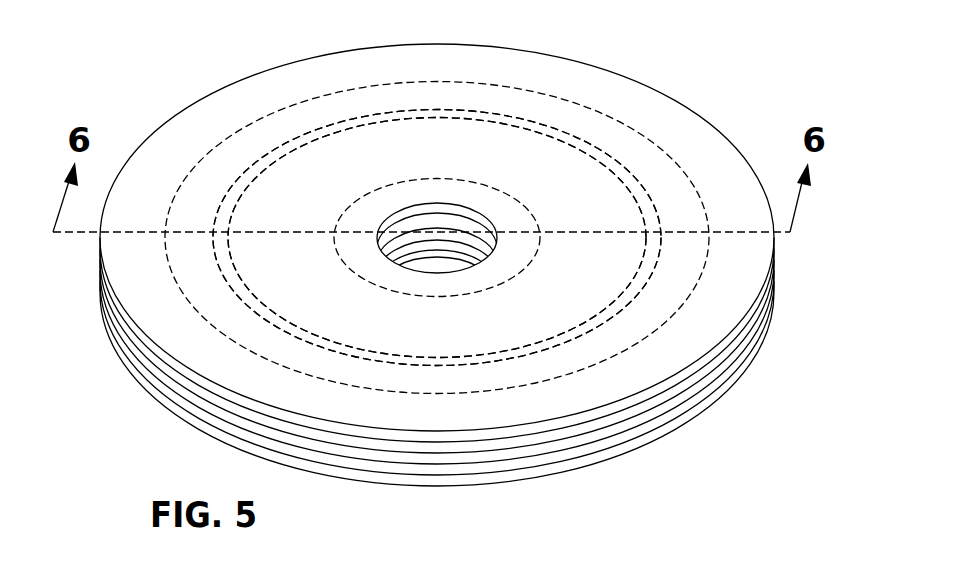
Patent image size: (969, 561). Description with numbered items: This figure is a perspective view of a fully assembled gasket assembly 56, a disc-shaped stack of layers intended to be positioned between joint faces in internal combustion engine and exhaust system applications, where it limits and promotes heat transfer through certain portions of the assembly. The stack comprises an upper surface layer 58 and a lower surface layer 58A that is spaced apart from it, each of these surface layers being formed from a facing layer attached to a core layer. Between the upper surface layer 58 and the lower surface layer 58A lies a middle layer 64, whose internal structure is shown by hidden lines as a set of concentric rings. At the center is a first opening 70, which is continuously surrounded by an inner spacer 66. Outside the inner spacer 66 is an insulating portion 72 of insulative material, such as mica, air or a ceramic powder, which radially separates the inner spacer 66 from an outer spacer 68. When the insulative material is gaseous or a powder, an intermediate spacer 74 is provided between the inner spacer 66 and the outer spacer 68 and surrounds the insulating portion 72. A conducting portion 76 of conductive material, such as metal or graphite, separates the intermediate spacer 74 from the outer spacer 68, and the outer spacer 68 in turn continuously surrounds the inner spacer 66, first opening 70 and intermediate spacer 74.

The gasket assembly 56 is at (455, 248).
The upper surface layer 58 is at (738, 333).
The lower surface layer 58A is at (718, 385).
The middle layer 64 is at (241, 317).
The inner spacer 66 is at (368, 265).
The outer spacer 68 is at (308, 385).
The first opening 70 is at (440, 218).
The insulating portion 72 is at (577, 210).
The intermediate spacer 74 is at (565, 323).
The conducting portion 76 is at (647, 308).